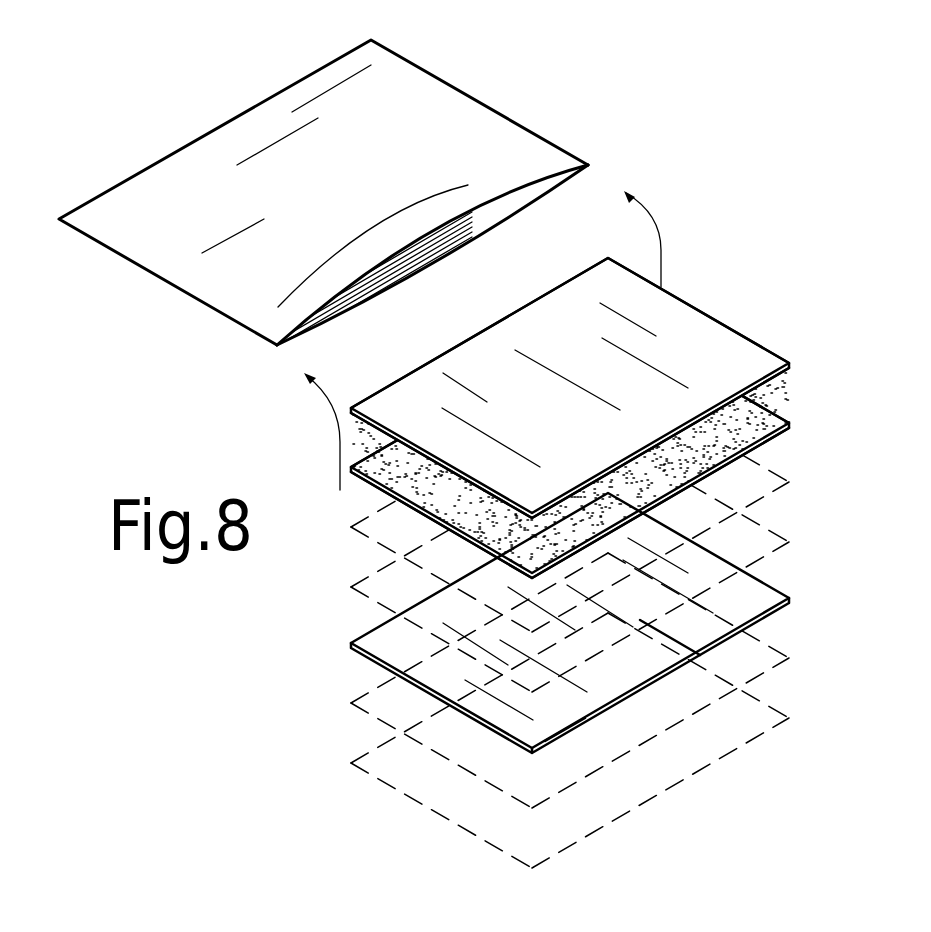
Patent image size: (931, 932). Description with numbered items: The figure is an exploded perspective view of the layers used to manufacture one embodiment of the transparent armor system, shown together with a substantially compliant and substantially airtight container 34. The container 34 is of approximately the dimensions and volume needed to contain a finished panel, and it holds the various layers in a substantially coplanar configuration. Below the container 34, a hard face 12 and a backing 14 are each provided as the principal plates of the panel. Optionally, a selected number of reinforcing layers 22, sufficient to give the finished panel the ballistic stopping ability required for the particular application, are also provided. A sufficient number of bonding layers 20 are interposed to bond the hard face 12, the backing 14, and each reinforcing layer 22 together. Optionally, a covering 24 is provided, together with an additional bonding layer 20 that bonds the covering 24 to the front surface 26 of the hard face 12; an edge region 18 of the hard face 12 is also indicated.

The hard face 12 is at (788, 598).
The backing 14 is at (788, 363).
The edge portion 18 is at (653, 657).
The bonding layer 20 is at (788, 422).
The reinforcing layer 22 is at (788, 482).
The covering 24 is at (788, 718).
The front surface 26 is at (563, 737).
The substantially airtight container 34 is at (550, 142).